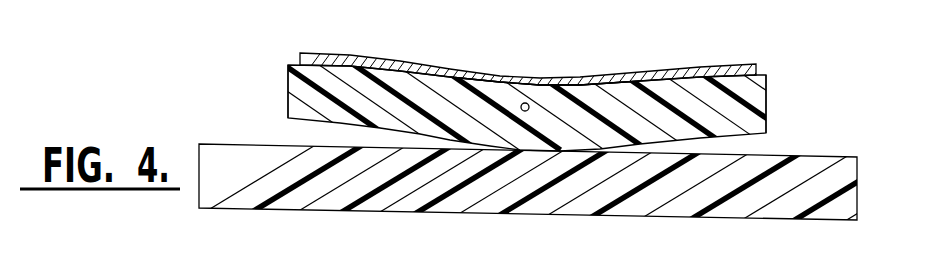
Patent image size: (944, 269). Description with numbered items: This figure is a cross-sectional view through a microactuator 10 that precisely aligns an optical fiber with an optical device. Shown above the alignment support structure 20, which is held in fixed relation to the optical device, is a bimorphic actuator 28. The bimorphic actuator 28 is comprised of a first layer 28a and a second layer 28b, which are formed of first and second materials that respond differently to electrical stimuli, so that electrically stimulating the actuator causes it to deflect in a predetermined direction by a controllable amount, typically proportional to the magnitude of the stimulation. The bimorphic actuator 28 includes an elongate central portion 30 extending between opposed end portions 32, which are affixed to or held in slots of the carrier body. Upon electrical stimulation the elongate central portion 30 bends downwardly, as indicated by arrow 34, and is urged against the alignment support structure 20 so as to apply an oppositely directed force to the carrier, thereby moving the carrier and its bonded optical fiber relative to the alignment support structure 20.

The microactuator 10 is at (841, 53).
The alignment support structure 20 is at (726, 209).
The bimorphic actuator 28 is at (532, 80).
The first layer 28a is at (298, 92).
The second layer 28b is at (397, 67).
The elongate central portion 30 is at (552, 95).
The opposed end portions 32 is at (297, 68).
The arrow 34 is at (525, 128).